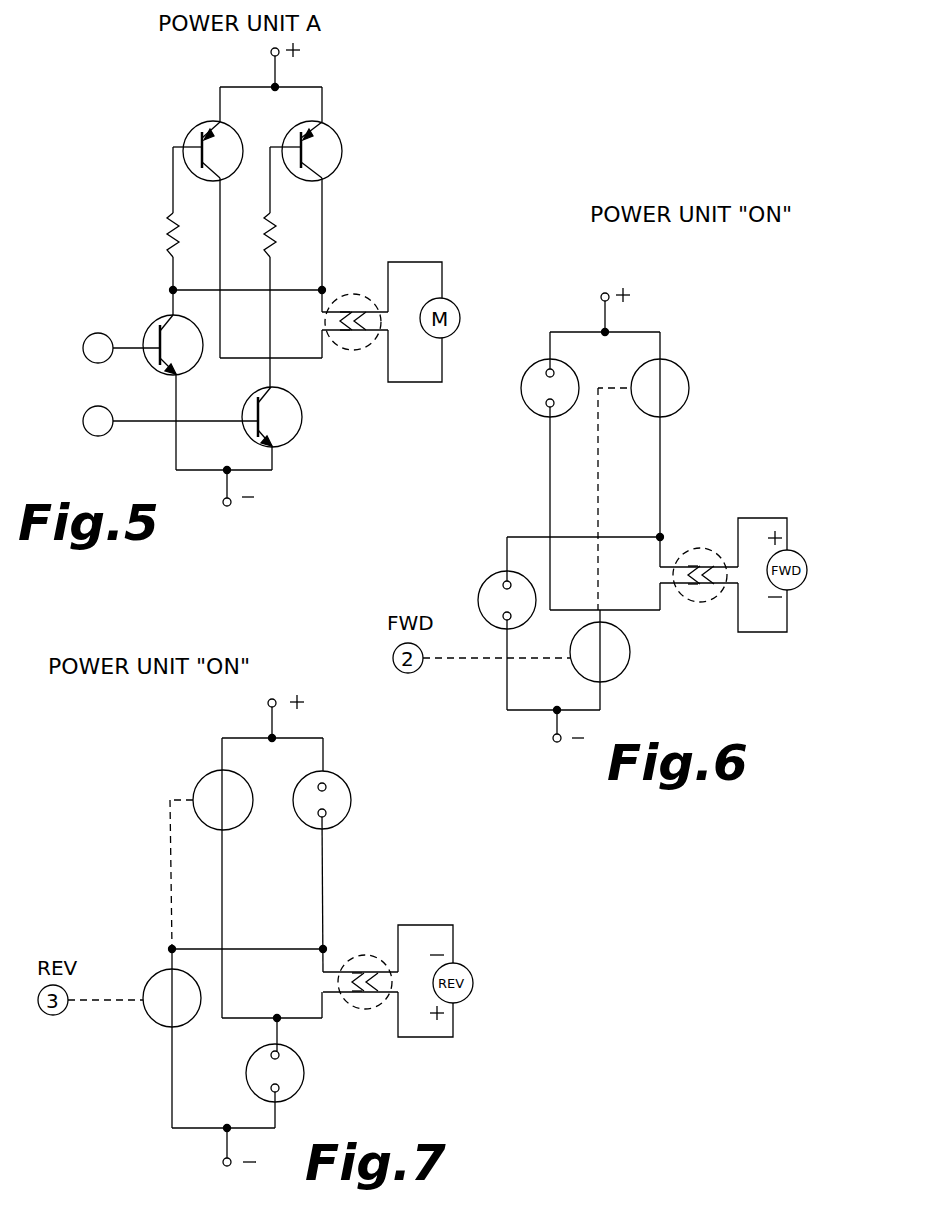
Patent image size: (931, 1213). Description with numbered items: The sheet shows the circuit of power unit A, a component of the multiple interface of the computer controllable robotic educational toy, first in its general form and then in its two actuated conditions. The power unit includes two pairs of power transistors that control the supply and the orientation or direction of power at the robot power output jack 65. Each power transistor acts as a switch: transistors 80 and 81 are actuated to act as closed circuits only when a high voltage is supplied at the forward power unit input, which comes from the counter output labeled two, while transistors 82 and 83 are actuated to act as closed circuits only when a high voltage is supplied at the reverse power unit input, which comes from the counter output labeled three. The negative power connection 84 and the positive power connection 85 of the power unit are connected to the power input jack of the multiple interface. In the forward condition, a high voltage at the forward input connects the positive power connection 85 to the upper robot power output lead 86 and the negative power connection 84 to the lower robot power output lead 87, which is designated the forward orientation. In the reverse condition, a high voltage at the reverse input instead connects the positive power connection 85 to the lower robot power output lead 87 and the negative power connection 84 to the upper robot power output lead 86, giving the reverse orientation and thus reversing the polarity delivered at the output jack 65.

In FIG. 5, the robot power output jack 65 is at (356, 294).
In FIG. 6, the robot power output jack 65 is at (712, 598).
In FIG. 7, the robot power output jack 65 is at (375, 953).
In FIG. 5, the power transistor 80 is at (301, 425).
In FIG. 5, the power transistor 81 is at (343, 162).
In FIG. 5, the power transistor 82 is at (192, 370).
In FIG. 5, the power transistor 83 is at (230, 177).
In FIG. 5, the negative power connection 84 is at (231, 480).
In FIG. 6, the negative power connection 84 is at (560, 720).
In FIG. 7, the negative power connection 84 is at (231, 1143).
In FIG. 5, the positive power connection 85 is at (277, 68).
In FIG. 6, the positive power connection 85 is at (607, 317).
In FIG. 7, the positive power connection 85 is at (274, 723).
In FIG. 6, the upper robot power output lead 86 is at (670, 561).
In FIG. 7, the upper robot power output lead 86 is at (332, 972).
In FIG. 6, the lower robot power output lead 87 is at (673, 593).
In FIG. 7, the lower robot power output lead 87 is at (332, 998).